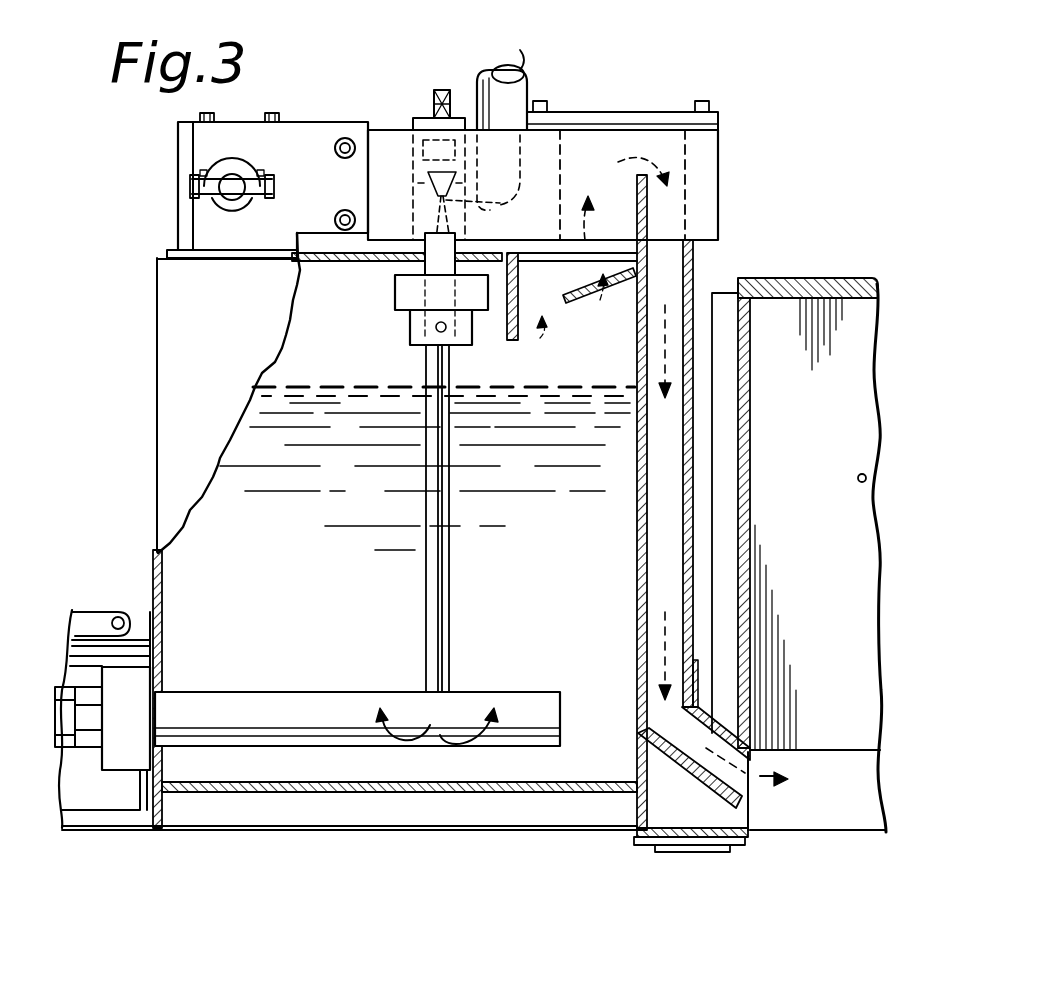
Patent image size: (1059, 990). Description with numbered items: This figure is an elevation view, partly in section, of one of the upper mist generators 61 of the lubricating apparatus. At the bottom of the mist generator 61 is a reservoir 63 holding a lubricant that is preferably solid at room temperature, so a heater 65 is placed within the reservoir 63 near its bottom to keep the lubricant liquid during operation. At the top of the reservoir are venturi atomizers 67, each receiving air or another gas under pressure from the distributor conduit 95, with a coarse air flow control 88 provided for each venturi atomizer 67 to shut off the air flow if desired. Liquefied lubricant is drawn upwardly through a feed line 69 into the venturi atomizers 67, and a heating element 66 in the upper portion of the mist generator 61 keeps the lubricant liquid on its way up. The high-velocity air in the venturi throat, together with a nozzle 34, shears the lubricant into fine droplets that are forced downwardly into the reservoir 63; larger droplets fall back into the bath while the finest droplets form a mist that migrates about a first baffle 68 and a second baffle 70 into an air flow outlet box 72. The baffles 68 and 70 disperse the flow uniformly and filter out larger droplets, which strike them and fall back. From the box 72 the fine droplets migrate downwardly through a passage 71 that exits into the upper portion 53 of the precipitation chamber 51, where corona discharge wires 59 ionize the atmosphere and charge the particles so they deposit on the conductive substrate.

The nozzle 34 is at (470, 206).
The precipitation chamber 51 is at (797, 270).
The upper portion of the precipitation chamber 53 is at (815, 505).
The electrodes or wires 59 is at (866, 478).
The upper mist generator 61 is at (388, 106).
The reservoir portion 63 is at (234, 347).
The heater 65 is at (540, 694).
The heating element 66 is at (368, 184).
The venturi atomizer 67 is at (399, 118).
The first baffle 68 is at (503, 362).
The feed line 69 is at (449, 635).
The second baffle 70 is at (586, 300).
The passage 71 is at (637, 533).
The air flow outlet box 72 is at (640, 138).
The coarse air flow control 88 is at (450, 88).
The distributor conduit 95 is at (525, 76).